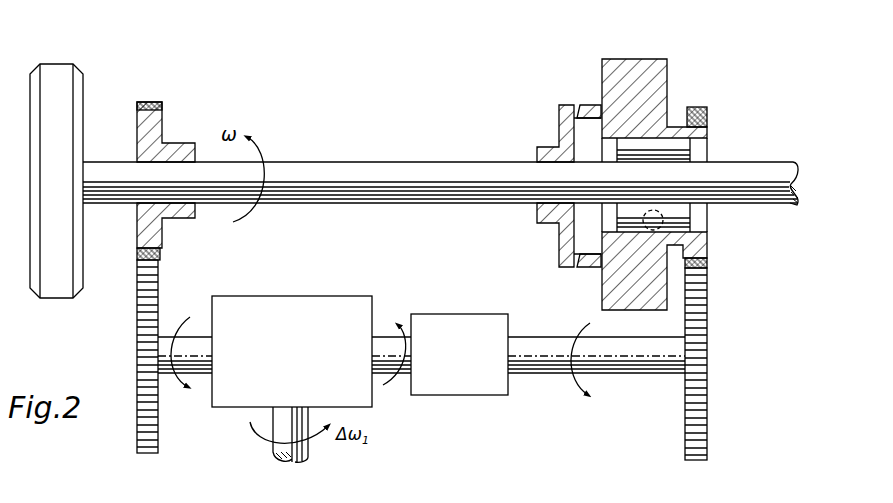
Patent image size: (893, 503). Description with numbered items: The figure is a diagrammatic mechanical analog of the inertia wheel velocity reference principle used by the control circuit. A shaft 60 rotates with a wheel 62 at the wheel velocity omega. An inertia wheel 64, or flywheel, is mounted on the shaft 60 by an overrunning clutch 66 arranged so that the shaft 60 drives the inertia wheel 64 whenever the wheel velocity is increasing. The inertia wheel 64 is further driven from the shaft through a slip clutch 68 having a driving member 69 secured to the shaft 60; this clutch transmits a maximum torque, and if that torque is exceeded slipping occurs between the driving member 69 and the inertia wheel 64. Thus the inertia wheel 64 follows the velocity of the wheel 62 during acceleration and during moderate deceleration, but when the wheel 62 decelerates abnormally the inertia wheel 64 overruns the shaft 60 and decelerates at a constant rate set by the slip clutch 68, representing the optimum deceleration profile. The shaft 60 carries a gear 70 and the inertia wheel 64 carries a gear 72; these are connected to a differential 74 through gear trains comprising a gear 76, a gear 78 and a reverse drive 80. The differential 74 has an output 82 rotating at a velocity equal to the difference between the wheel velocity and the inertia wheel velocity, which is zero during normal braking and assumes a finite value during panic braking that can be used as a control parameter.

The shaft 60 is at (364, 162).
The wheel 62 is at (63, 64).
The inertia wheel 64 is at (668, 82).
The overrunning clutch 66 is at (707, 150).
The slip clutch 68 is at (555, 118).
The driving member 69 is at (580, 105).
The gear 70 is at (162, 135).
The gear 72 is at (707, 108).
The differential 74 is at (352, 296).
The gear 76 is at (137, 322).
The gear 78 is at (707, 376).
The reverse drive 80 is at (468, 395).
The output 82 is at (273, 449).